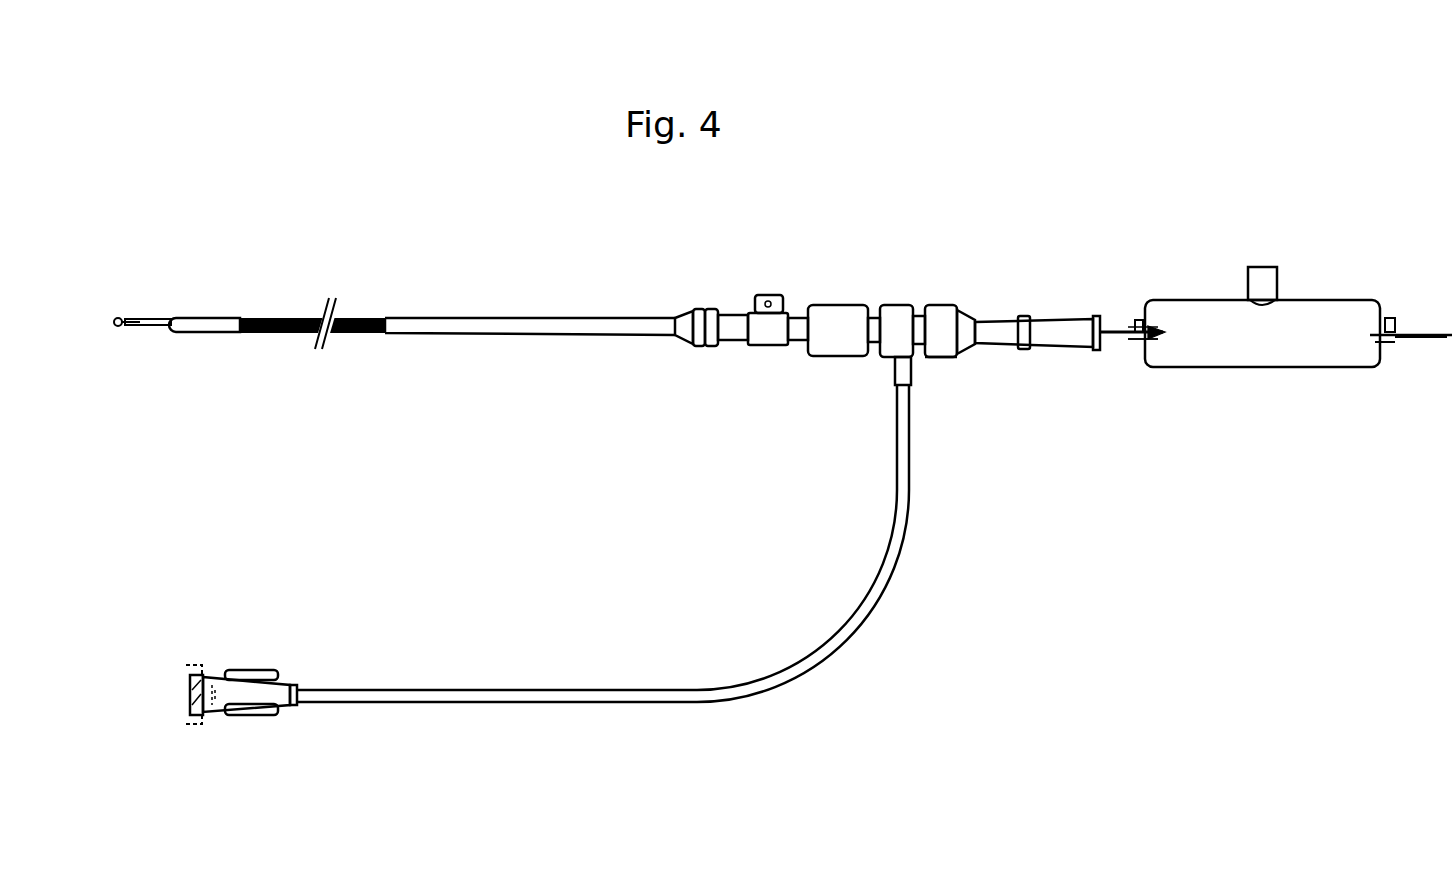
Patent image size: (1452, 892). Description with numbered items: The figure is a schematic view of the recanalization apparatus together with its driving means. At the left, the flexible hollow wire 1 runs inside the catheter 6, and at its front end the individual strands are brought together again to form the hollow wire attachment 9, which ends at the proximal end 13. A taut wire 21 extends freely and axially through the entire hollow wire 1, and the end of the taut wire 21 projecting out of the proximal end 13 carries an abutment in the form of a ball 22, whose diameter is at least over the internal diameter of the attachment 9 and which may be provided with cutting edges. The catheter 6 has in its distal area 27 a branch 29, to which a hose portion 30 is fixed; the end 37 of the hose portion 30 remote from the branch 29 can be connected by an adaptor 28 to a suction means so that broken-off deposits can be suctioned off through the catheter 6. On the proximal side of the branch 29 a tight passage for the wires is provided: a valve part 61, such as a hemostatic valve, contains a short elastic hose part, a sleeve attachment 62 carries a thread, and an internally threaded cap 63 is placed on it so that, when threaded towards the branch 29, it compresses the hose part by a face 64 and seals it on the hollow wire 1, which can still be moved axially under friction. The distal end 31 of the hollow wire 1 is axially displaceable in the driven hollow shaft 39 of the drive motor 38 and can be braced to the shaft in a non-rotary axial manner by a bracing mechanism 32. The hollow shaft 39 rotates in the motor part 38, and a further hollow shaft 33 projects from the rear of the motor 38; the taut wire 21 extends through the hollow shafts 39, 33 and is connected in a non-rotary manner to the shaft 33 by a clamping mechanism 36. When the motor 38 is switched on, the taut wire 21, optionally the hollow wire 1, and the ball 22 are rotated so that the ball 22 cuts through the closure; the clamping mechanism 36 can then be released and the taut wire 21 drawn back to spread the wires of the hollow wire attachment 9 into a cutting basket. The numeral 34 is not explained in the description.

The flexible hollow wire 1 is at (340, 336).
The catheter 6 is at (194, 334).
The hollow wire attachment 9 is at (157, 318).
The proximal end 13 is at (116, 338).
The taut wire 21 is at (128, 322).
The ball 22 is at (119, 318).
The distal area 27 is at (857, 300).
The adaptor 28 is at (225, 680).
The branch 29 is at (895, 380).
The hose portion 30 is at (580, 703).
The distal end 31 is at (1124, 330).
The bracing mechanism 32 is at (1145, 325).
The hollow shaft 33 is at (1393, 348).
The bottle cap 34 is at (1383, 302).
The clamping mechanism 36 is at (1392, 320).
The end 37 is at (1111, 321).
The drive motor 38 is at (1243, 358).
The driven hollow shaft 39 is at (1136, 342).
The valve part 61 is at (936, 302).
The sleeve attachment 62 is at (920, 306).
The cap 63 is at (943, 359).
The face 64 is at (960, 318).